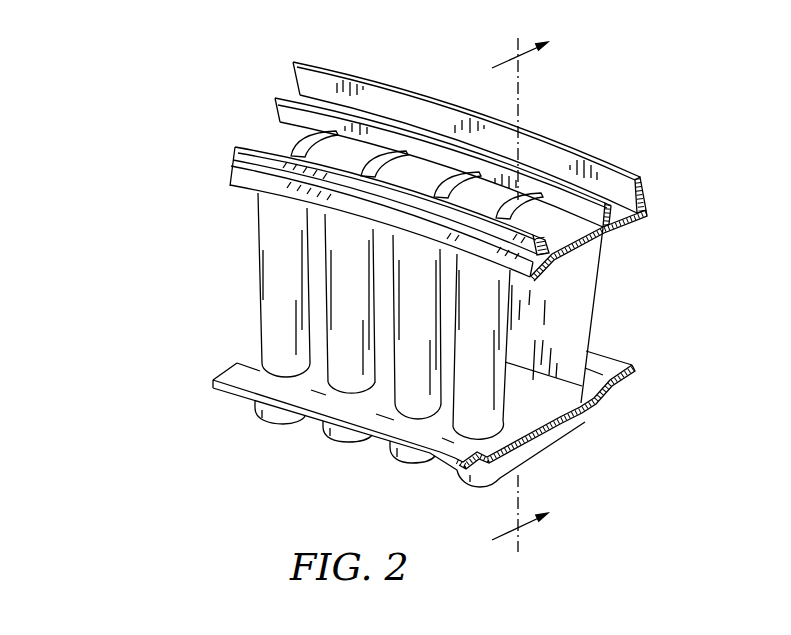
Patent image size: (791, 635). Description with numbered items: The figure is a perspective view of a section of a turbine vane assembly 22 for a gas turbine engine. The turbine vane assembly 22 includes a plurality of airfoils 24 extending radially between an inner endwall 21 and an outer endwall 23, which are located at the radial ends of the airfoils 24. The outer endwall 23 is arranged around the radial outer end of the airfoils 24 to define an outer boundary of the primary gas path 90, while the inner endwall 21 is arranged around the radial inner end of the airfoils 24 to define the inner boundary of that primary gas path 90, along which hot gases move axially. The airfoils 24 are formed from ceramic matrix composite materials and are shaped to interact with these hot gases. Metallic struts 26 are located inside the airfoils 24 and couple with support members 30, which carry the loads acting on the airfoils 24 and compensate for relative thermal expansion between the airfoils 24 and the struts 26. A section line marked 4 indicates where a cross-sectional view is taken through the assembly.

The turbine vane assembly 22 is at (150, 110).
The outer endwall 23 is at (650, 190).
The airfoil 24 is at (580, 273).
The strut 26 is at (556, 316).
The inner endwall 21 is at (629, 388).
The support member 30 is at (549, 452).
The primary gas path 90 is at (526, 383).
The section line 4- 4 is at (511, 298).